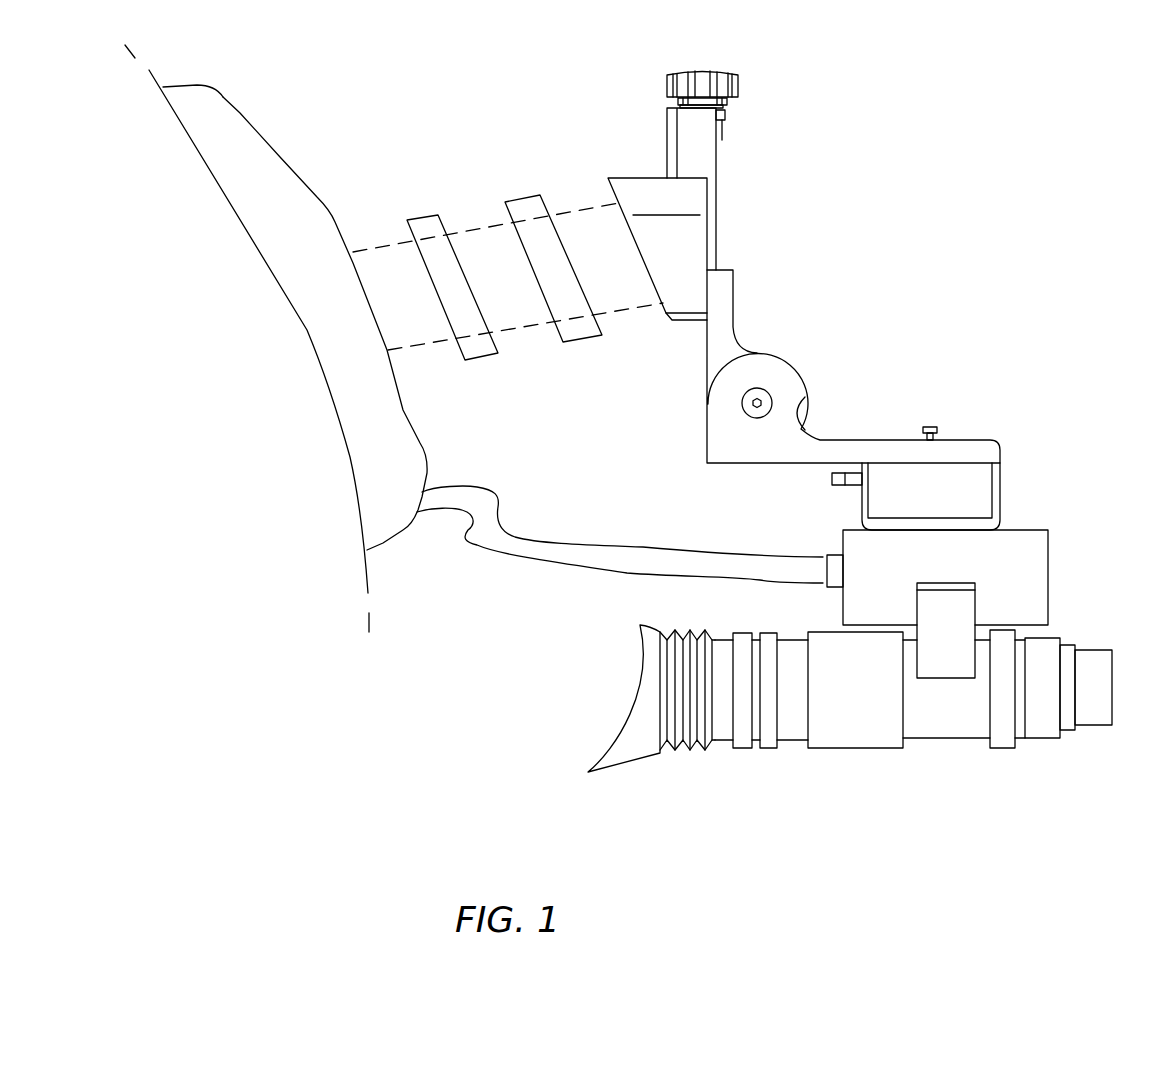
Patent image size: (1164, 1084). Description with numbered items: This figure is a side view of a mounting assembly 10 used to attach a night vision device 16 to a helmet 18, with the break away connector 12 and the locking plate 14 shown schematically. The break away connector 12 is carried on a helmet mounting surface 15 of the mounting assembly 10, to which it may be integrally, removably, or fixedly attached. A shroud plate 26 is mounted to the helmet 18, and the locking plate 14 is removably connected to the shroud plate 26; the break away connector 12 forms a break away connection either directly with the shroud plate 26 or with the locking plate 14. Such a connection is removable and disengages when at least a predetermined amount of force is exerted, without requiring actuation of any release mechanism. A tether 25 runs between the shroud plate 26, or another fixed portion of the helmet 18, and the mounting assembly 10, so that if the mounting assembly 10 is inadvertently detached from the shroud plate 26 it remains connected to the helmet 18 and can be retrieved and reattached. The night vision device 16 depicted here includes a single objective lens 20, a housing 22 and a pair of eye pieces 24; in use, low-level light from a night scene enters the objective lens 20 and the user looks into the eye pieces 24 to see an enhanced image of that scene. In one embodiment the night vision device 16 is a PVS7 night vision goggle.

The mounting assembly 10 is at (787, 362).
The break away connector 12 is at (585, 347).
The locking plate 14 is at (478, 362).
The helmet mounting surface 15 is at (620, 220).
The night vision device 16 is at (863, 765).
The helmet 18 is at (201, 372).
The objective lens 20 is at (1093, 707).
The housing 22 is at (868, 693).
The eye pieces 24 is at (625, 750).
The tether 25 is at (552, 538).
The shroud plate 26 is at (233, 132).